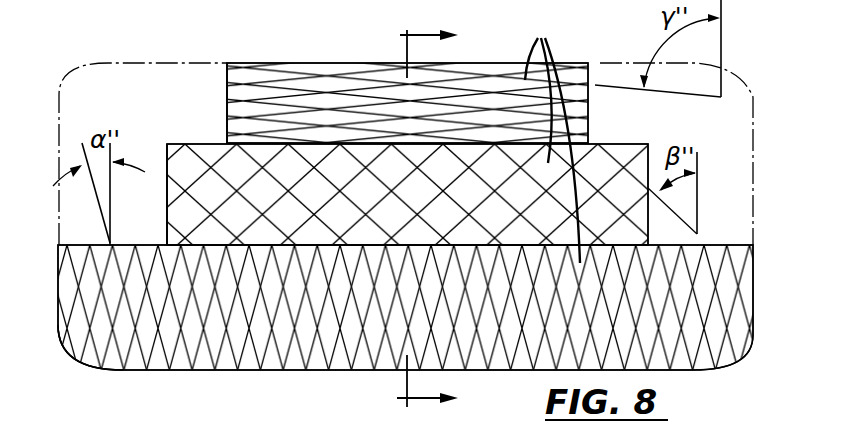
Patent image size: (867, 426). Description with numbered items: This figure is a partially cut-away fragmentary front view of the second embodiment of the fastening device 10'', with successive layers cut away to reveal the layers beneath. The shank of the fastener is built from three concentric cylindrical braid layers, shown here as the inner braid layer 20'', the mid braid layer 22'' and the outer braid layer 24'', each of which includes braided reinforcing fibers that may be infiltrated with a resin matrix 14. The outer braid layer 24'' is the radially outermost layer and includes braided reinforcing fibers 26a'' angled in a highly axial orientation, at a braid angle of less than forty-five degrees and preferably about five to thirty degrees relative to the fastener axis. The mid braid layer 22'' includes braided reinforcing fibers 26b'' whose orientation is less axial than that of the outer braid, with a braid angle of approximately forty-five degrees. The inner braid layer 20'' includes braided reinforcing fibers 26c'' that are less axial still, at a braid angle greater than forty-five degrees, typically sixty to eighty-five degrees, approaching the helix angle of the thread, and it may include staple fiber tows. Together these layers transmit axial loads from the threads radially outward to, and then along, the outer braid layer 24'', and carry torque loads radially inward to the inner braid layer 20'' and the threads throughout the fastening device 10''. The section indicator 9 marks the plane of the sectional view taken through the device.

The fastening device 10'' is at (433, 122).
The resin matrix 14 is at (552, 136).
The inner braid layer 20'' is at (441, 103).
The mid braid layer 22'' is at (459, 194).
The outer braid layer 24'' is at (441, 307).
The braided reinforcing fibers of the outer braid 26a'' is at (70, 370).
The braided reinforcing fibers of the mid braid layer 26b'' is at (90, 194).
The braided reinforcing fibers of the inner braid layer 26c'' is at (195, 103).
The section line 9- 9 is at (440, 219).